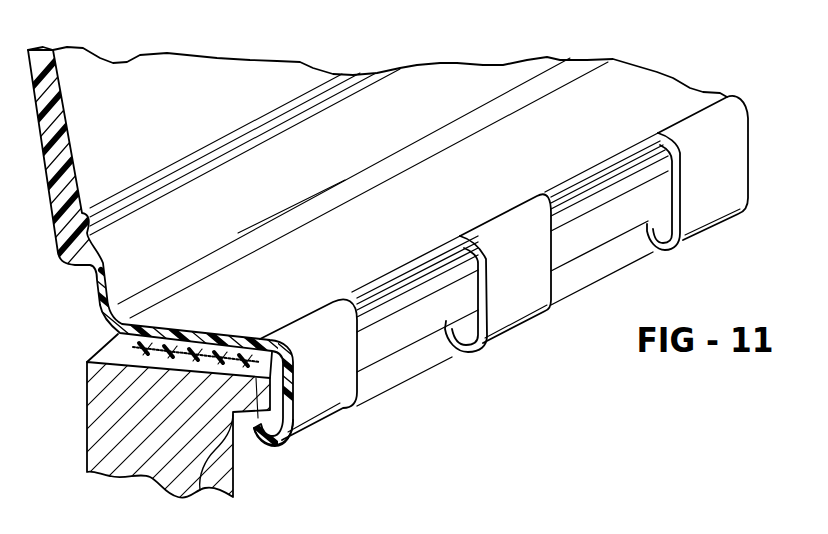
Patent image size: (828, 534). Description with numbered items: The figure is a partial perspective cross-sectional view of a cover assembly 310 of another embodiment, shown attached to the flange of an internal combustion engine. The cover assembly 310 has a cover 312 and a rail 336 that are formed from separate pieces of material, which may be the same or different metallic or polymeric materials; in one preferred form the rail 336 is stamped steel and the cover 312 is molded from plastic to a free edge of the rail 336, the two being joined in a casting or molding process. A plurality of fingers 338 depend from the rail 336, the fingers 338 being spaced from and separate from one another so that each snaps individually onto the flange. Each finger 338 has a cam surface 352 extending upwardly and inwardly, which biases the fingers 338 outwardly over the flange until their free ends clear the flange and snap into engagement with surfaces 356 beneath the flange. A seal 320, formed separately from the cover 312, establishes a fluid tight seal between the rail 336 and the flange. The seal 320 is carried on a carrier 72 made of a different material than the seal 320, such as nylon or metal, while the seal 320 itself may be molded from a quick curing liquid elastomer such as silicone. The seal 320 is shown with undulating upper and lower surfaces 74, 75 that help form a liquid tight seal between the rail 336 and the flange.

The cover assembly 310 is at (390, 248).
The cover 312 is at (157, 70).
The seal 320 is at (124, 348).
The rail 336 is at (645, 101).
The fingers 338 is at (282, 365).
The cam surfaces 352 is at (247, 430).
The carrier 72 is at (98, 371).
The undulating upper surface 74 is at (197, 352).
The undulating lower surface 75 is at (192, 358).
The surfaces beneath the flange 356 is at (200, 491).